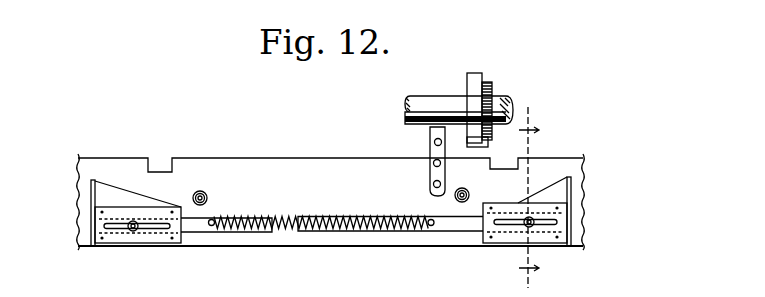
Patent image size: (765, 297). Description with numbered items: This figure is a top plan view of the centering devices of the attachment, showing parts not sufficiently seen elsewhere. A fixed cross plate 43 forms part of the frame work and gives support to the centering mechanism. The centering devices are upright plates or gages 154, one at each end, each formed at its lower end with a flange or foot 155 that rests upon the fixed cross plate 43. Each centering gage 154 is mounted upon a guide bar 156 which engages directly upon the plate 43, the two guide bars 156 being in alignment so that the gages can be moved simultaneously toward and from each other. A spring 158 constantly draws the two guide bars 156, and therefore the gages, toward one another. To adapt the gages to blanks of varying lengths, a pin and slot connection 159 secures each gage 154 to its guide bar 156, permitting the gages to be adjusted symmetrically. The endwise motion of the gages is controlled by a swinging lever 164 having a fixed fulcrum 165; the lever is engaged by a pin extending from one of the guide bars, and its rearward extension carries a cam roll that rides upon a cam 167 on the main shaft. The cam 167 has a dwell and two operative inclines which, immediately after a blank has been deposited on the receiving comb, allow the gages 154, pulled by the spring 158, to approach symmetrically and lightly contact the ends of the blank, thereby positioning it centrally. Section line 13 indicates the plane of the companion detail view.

The section line 13- 13 is at (537, 198).
The fixed cross plate 43 is at (331, 202).
The centering gage 154 is at (91, 196).
The flange or foot 155 is at (120, 207).
The guide bar 156 is at (197, 226).
The spring 158 is at (283, 230).
The pin and slot connection 159 is at (133, 232).
The swinging lever 164 is at (438, 127).
The fixed fulcrum 165 is at (430, 142).
The cam 167 is at (477, 80).